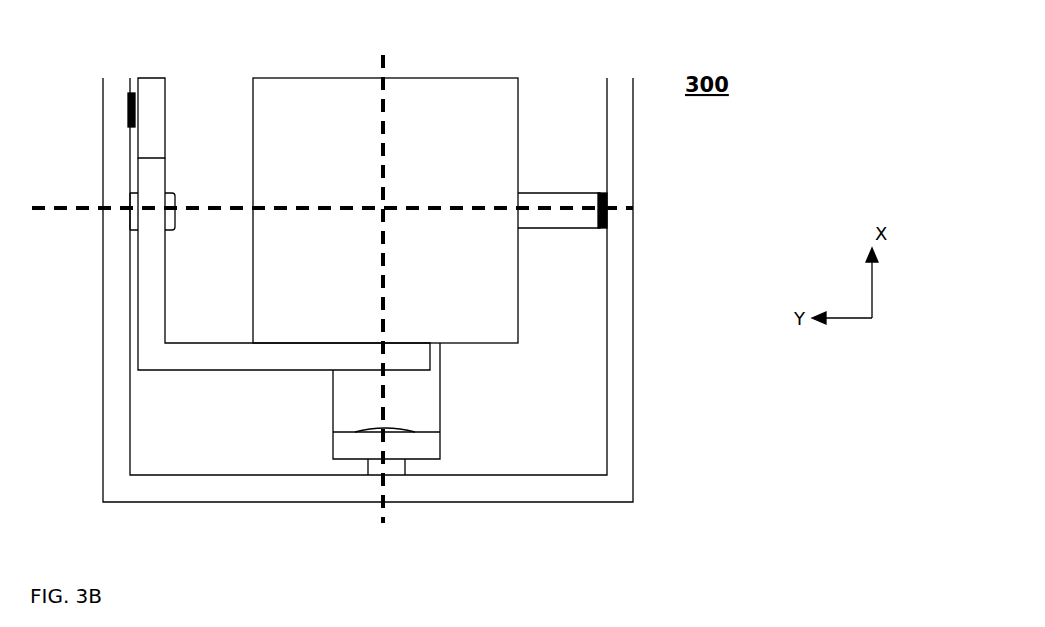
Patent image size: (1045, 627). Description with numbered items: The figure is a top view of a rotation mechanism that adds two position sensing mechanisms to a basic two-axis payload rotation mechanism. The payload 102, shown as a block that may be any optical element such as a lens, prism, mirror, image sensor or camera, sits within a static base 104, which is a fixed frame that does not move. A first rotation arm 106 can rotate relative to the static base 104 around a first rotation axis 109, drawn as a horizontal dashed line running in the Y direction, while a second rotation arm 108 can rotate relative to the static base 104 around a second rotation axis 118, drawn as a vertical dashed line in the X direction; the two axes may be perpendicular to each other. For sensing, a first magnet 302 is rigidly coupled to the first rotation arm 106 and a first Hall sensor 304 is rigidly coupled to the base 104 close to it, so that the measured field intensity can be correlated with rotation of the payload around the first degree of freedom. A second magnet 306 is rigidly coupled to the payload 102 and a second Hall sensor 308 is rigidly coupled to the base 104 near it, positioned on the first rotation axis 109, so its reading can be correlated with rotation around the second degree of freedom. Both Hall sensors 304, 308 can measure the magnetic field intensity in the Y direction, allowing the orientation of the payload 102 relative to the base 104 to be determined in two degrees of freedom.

The payload 102 is at (490, 93).
The static base 104 is at (612, 390).
The first rotation arm 106 is at (207, 355).
The second rotation arm 108 is at (420, 400).
The first rotation axis 109 is at (45, 210).
The second rotation axis 118 is at (385, 510).
The first magnet 302 is at (152, 130).
The first Hall sensor 304 is at (128, 120).
The second magnet 306 is at (545, 228).
The second Hall sensor 308 is at (607, 195).